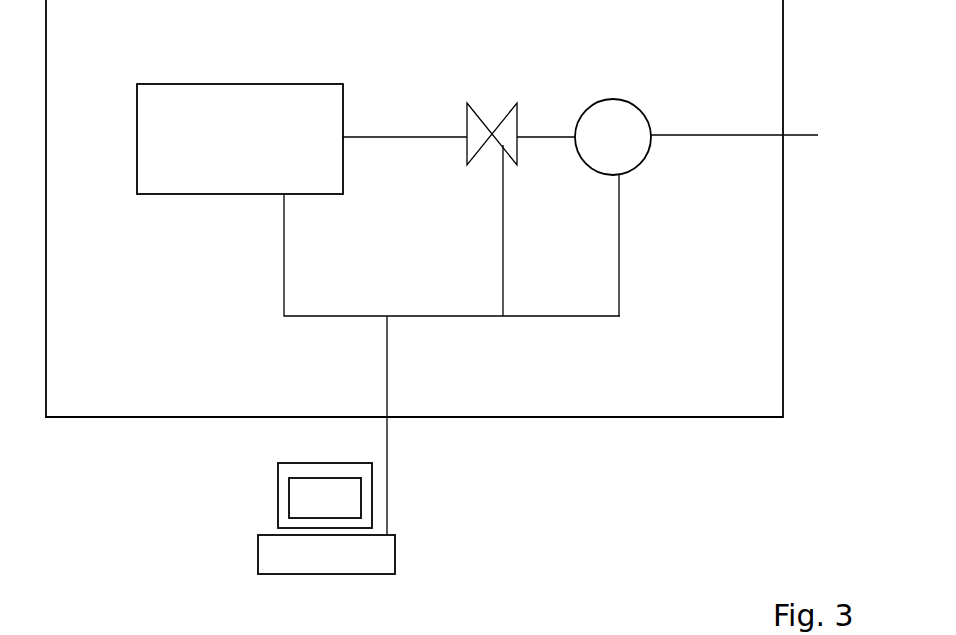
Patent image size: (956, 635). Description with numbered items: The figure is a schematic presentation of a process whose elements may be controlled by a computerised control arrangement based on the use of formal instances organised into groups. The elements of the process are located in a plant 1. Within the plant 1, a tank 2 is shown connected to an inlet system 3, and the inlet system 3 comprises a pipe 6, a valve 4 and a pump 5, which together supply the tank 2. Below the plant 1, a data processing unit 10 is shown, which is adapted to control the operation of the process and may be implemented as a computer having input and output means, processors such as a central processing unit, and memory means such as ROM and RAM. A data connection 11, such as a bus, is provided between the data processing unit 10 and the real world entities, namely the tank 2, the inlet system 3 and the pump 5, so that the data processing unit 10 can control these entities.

The plant 1 is at (248, 386).
The tank 2 is at (193, 185).
The inlet system 3 is at (680, 228).
The valve 4 is at (483, 140).
The pump 5 is at (592, 150).
The pipe 6 is at (423, 138).
The data processing unit 10 is at (312, 560).
The data connection 11 is at (388, 473).